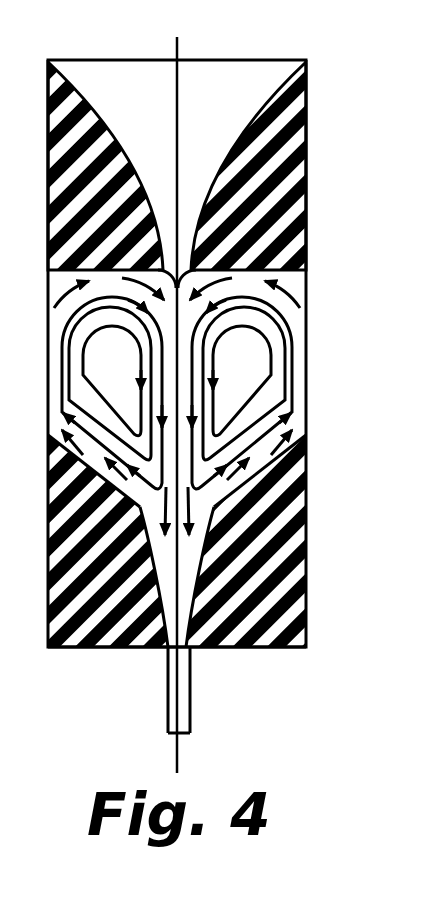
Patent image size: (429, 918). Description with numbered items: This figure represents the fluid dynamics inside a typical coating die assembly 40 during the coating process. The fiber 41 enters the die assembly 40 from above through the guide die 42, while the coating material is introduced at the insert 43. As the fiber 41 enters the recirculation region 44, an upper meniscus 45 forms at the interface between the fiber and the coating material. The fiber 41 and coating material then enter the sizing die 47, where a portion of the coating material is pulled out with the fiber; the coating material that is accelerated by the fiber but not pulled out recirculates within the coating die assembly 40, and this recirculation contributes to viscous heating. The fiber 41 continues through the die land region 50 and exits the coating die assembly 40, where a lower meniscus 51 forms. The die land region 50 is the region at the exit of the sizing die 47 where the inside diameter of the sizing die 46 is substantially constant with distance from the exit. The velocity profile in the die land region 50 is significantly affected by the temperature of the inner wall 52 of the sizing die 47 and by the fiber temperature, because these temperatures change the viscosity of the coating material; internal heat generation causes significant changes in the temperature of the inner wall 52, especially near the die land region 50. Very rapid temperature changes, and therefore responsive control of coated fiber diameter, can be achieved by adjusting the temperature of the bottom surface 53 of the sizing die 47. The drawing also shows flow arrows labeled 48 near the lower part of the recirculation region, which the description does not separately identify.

The coating die assembly 40 is at (334, 57).
The fiber 41 is at (178, 45).
The guide die 42 is at (290, 163).
The insert 43 is at (306, 318).
The recirculation region 44 is at (283, 397).
The upper meniscus 45 is at (200, 270).
The inside diameter of sizing die 46 is at (193, 506).
The sizing die 47 is at (290, 600).
The recirculating flow 48 is at (138, 497).
The die land region 50 is at (193, 648).
The lower meniscus 51 is at (168, 647).
The inner wall 52 is at (165, 632).
The bottom surface 53 is at (273, 648).